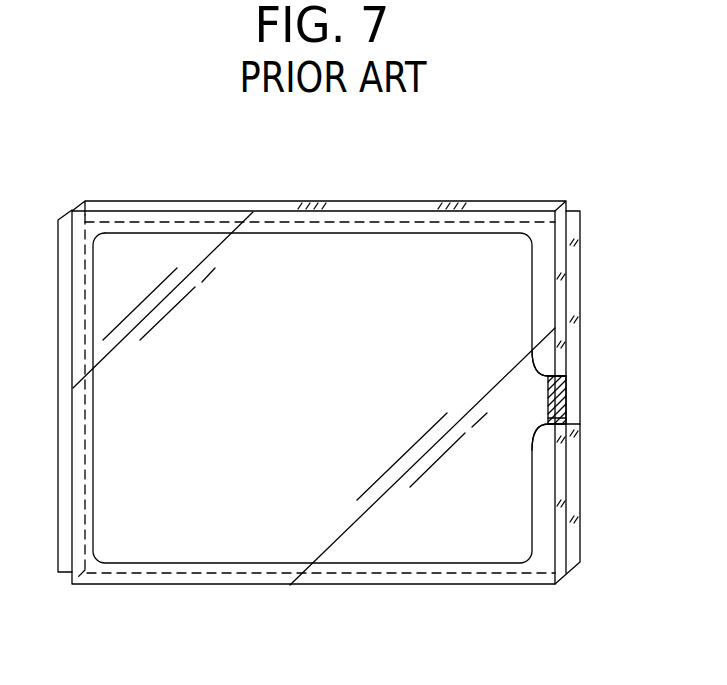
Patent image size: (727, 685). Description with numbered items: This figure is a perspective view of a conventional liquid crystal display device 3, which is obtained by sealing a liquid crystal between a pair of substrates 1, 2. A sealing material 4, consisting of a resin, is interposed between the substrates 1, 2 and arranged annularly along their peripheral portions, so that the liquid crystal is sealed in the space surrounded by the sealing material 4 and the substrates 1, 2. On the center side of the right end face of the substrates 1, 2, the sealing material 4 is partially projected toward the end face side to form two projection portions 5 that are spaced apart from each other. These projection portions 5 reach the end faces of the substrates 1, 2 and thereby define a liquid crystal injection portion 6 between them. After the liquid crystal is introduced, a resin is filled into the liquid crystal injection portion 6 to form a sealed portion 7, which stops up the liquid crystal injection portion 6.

The substrate 1 is at (338, 204).
The substrate 2 is at (578, 262).
The liquid crystal display device 3 is at (497, 191).
The sealing material 4 is at (288, 224).
The projection portions 5 is at (541, 374).
The liquid crystal injection portion 6 is at (568, 398).
The sealed portion 7 is at (566, 422).